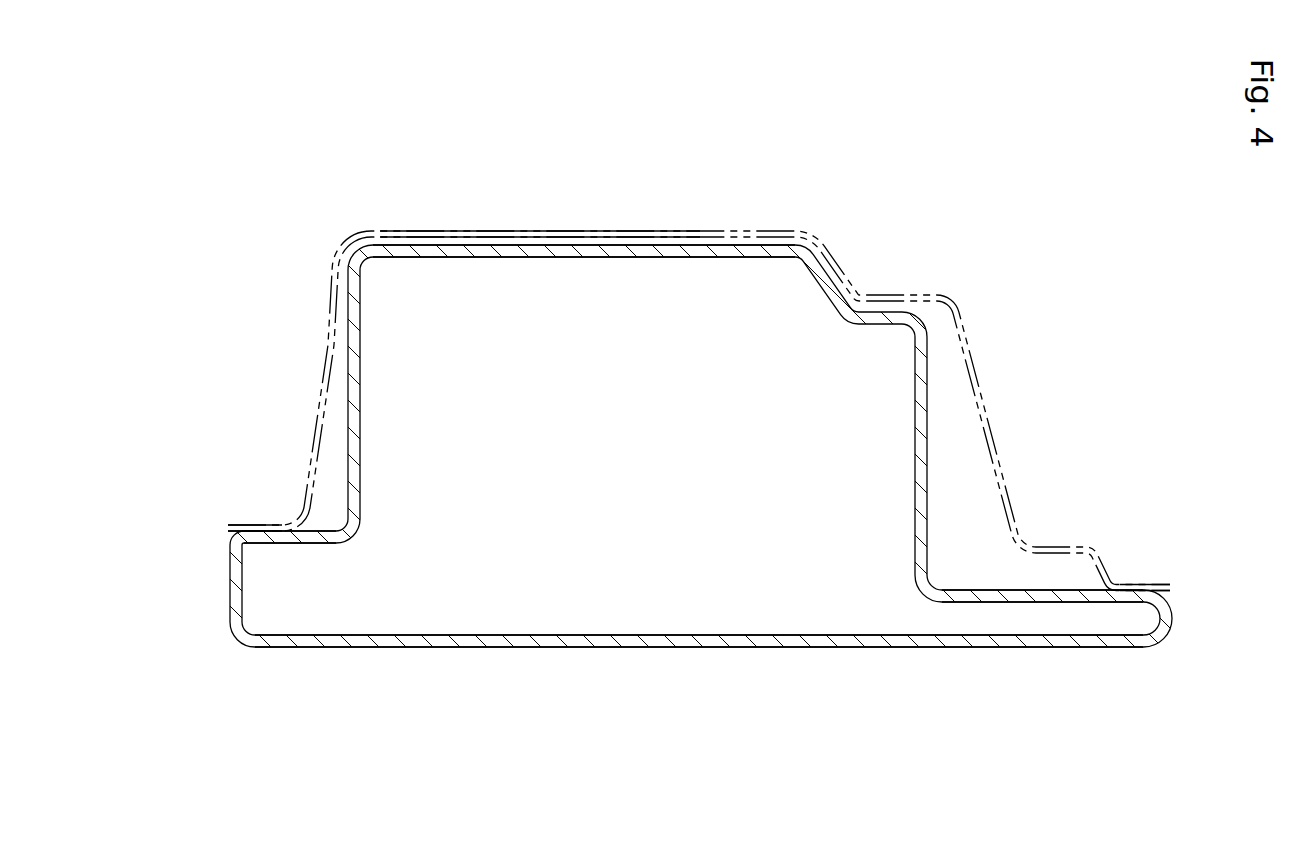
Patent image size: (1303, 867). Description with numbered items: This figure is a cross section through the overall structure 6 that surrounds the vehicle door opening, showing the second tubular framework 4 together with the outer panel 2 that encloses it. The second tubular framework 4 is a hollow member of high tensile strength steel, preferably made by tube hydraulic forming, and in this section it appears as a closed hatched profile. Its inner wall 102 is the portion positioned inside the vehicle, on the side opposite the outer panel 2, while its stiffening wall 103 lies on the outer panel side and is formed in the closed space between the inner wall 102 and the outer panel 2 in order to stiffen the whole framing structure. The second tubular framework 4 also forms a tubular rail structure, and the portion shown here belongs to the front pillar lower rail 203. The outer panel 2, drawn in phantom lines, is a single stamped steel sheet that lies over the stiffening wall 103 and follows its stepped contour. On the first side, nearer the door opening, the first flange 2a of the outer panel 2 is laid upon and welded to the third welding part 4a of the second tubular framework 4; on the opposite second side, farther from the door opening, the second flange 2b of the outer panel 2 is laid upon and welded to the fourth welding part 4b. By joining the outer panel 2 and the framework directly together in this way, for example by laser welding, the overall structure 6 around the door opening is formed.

The overall structure 6 is at (914, 191).
The second tubular framework 4 is at (555, 650).
The third welding part 4a is at (1125, 590).
The fourth welding part 4b is at (270, 529).
The inner wall 102 is at (707, 648).
The stiffening wall 103 is at (668, 258).
The outer panel 2 is at (611, 231).
The first flange 2a is at (1150, 583).
The second flange 2b is at (248, 517).
The front pillar lower rail 203 is at (521, 215).